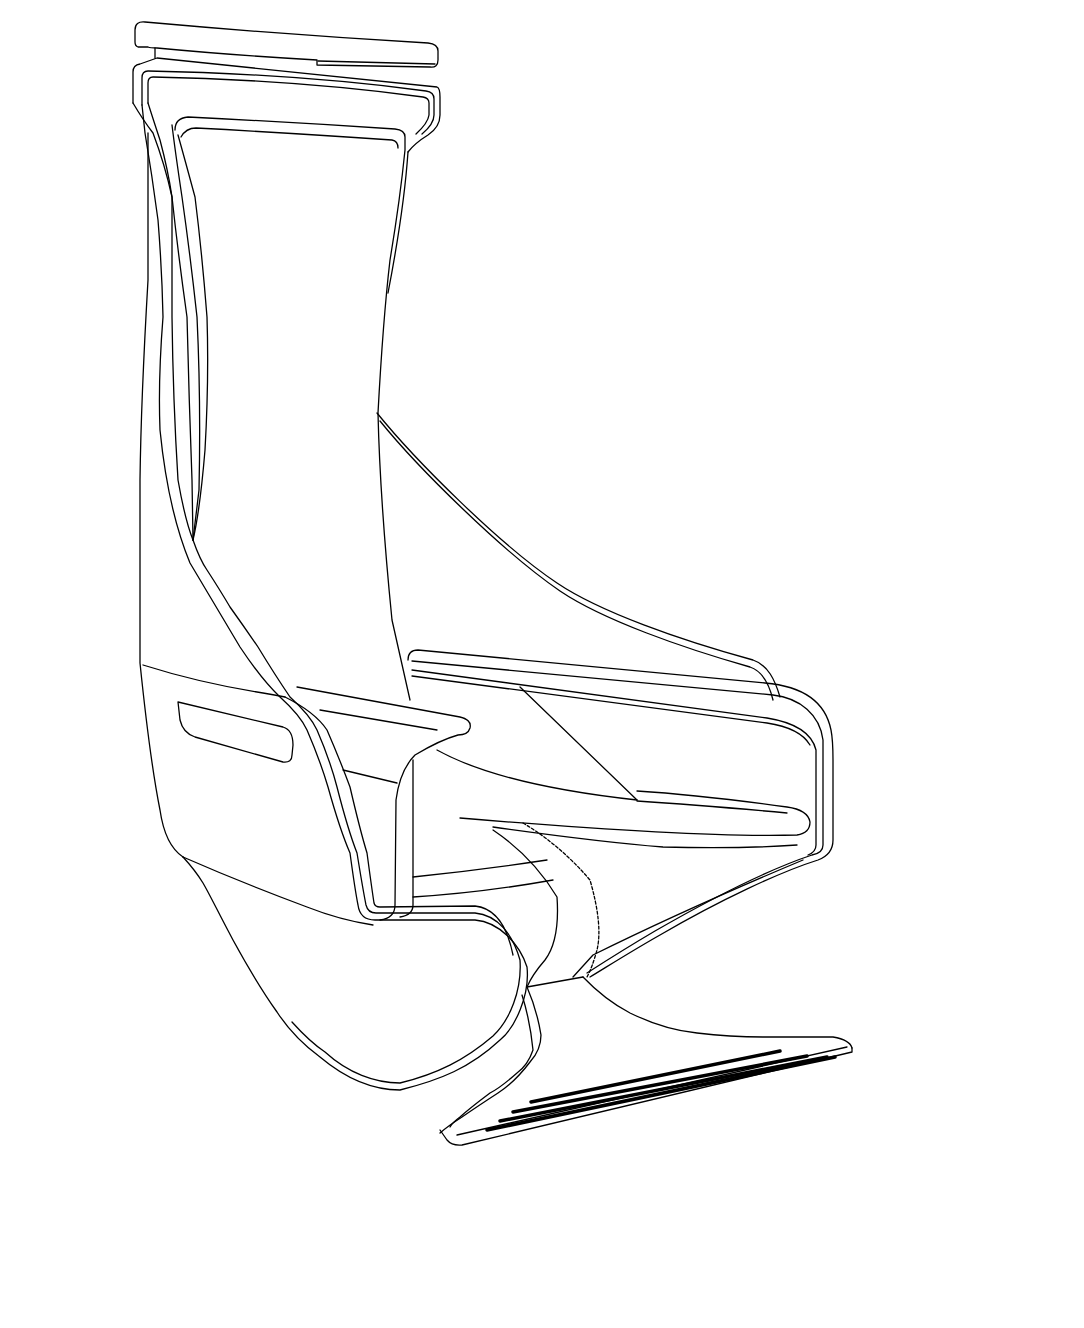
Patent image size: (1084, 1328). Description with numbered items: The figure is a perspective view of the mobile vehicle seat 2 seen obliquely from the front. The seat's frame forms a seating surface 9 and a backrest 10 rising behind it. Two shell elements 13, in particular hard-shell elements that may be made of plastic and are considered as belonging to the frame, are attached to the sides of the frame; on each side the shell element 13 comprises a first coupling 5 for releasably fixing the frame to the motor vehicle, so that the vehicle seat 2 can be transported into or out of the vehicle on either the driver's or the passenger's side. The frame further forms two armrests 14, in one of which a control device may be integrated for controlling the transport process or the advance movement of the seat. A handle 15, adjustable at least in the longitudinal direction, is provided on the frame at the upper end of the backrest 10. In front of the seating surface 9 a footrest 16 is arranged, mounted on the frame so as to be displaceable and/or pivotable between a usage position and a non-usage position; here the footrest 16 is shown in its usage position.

The mobile vehicle seat 2 is at (566, 377).
The first coupling 5 is at (203, 717).
The seating surface 9 is at (680, 828).
The backrest 10 is at (357, 262).
The shell element 13 is at (543, 610).
The armrest 14 is at (790, 768).
The handle 15 is at (420, 56).
The footrest 16 is at (680, 1083).